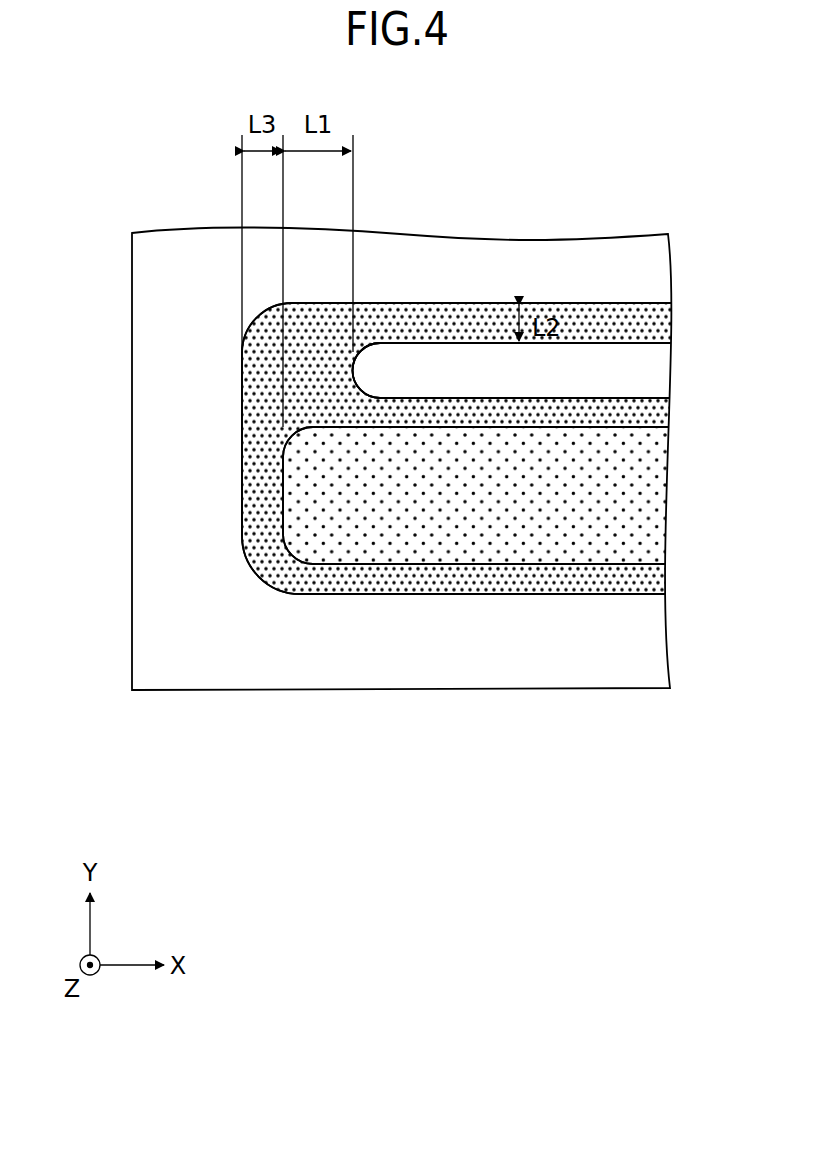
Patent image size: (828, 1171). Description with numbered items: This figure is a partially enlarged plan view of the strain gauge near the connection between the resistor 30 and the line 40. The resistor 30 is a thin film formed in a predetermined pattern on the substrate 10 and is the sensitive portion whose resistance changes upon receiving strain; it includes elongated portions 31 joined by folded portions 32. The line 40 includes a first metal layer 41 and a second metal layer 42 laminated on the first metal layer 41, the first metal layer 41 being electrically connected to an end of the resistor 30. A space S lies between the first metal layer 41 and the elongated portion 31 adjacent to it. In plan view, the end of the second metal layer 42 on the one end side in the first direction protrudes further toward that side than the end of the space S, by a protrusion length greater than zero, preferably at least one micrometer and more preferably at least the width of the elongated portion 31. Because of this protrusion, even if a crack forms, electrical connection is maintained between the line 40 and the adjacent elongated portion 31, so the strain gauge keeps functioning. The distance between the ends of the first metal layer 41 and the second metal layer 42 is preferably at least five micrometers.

The substrate 10 is at (225, 690).
The resistor 30 is at (387, 128).
The elongated portion 31 is at (474, 318).
The folded portion 32 is at (331, 375).
The space S is at (612, 367).
The line 40 is at (457, 778).
The first metal layer 41 is at (365, 577).
The second metal layer 42 is at (435, 545).